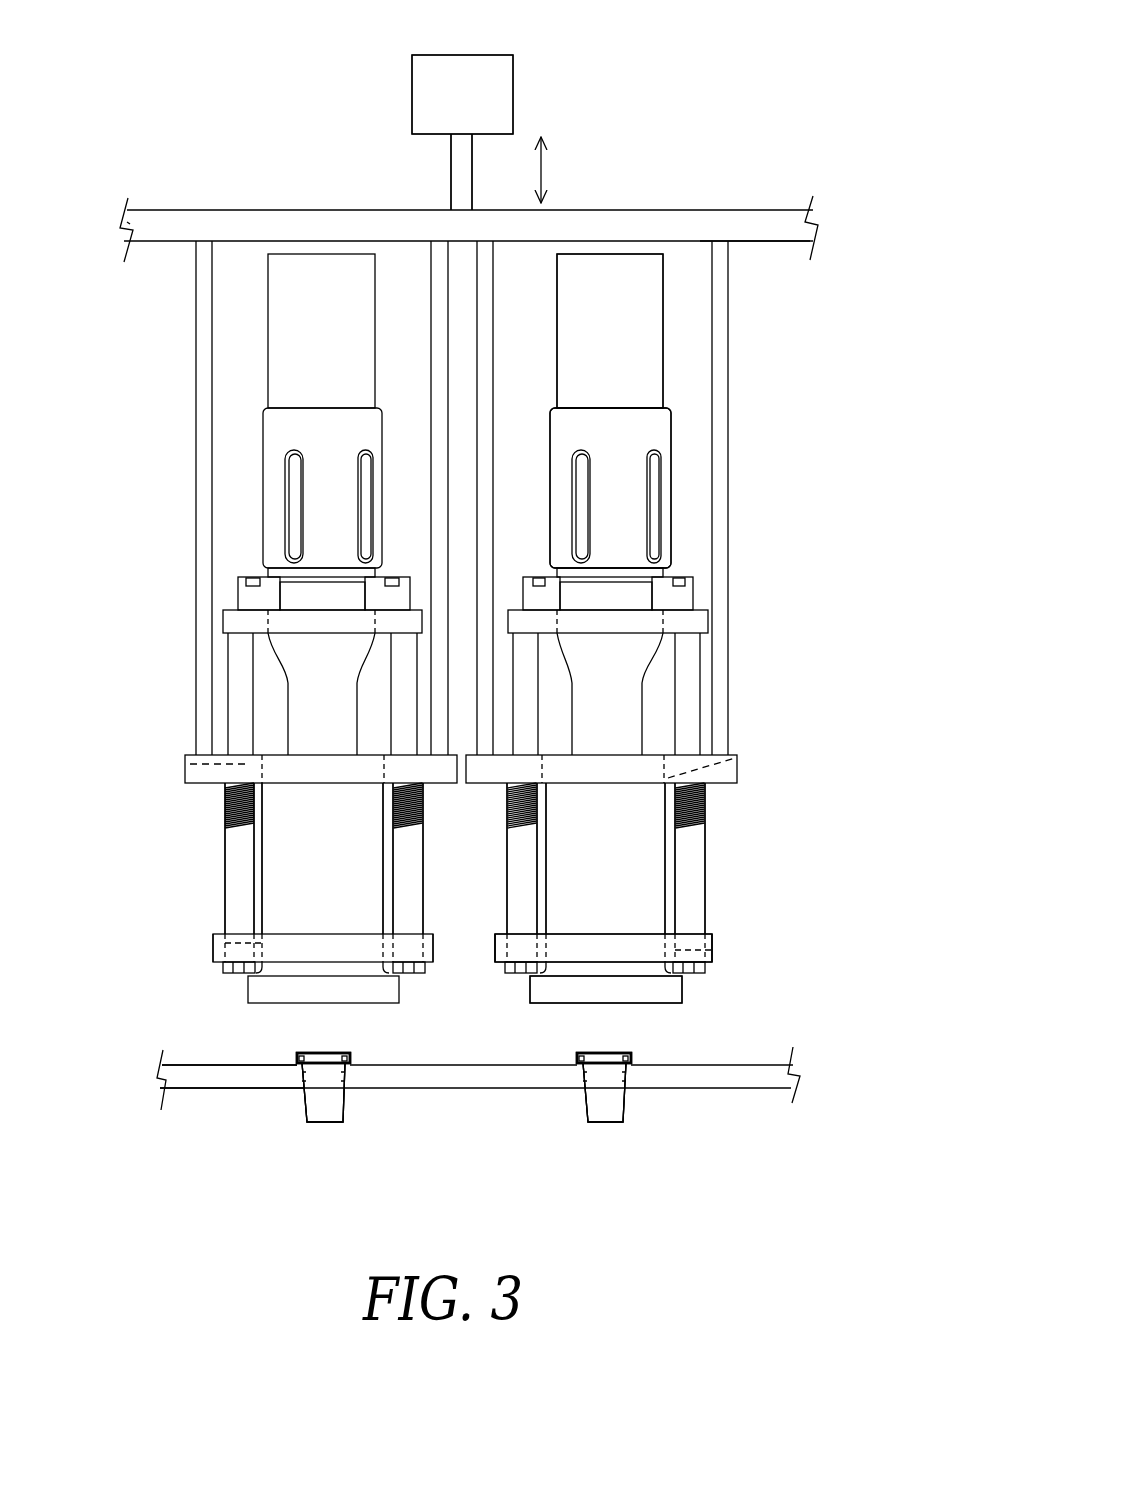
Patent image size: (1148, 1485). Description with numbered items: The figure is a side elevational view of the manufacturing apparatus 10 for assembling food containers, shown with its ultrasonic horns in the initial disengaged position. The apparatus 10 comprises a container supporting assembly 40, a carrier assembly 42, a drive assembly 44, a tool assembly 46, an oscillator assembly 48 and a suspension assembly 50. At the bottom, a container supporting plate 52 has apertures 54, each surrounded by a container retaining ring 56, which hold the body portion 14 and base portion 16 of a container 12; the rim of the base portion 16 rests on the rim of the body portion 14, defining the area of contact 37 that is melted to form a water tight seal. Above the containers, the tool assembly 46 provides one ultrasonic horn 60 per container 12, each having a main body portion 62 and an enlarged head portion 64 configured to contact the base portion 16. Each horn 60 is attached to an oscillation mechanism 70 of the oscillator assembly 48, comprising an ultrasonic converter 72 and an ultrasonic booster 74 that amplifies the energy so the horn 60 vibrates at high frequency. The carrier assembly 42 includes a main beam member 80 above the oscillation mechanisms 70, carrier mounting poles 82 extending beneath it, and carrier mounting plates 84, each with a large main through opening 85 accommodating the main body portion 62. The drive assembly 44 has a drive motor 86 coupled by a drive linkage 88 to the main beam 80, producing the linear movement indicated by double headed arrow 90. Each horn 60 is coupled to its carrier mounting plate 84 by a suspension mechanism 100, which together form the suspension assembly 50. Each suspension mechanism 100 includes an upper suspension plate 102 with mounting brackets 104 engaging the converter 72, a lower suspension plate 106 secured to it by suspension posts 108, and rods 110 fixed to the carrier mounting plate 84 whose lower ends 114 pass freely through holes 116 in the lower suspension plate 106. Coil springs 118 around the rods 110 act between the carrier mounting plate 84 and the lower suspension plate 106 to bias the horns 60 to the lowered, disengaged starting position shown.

The manufacturing apparatus 10 is at (745, 150).
The container 12 is at (305, 1138).
The body portion 14 is at (346, 1121).
The base portion 16 is at (330, 1052).
The area of contact 37 is at (352, 1058).
The container supporting assembly 40 is at (753, 1090).
The carrier assembly 42 is at (757, 208).
The drive assembly 44 is at (514, 84).
The tool assembly 46 is at (694, 990).
The oscillator assembly 48 is at (683, 448).
The suspension assembly 50 is at (718, 854).
The container supporting plate 52 is at (193, 1080).
The aperture 54 is at (300, 1080).
The container retaining ring 56 is at (297, 1062).
The ultrasonic horn 60 is at (352, 905).
The main body portion 62 is at (406, 862).
The enlarged head portion 64 is at (385, 988).
The oscillation mechanism 70 is at (354, 430).
The ultrasonic converter 72 is at (380, 487).
The ultrasonic booster 74 is at (306, 697).
The main beam member 80 is at (775, 232).
The carrier mounting pole 82 is at (208, 430).
The carrier mounting plate 84 is at (192, 783).
The large main through opening 85 is at (190, 764).
The drive motor 86 is at (412, 88).
The drive linkage 88 is at (451, 172).
The double headed arrow 90 is at (545, 166).
The suspension mechanism 100 is at (508, 834).
The upper suspension plate 102 is at (236, 623).
The mounting bracket 104 is at (402, 586).
The lower suspension plate 106 is at (437, 944).
The suspension post 108 is at (240, 706).
The suspension rod 110 is at (220, 940).
The lower end 114 is at (232, 966).
The hole 116 is at (225, 943).
The coil spring 118 is at (232, 860).